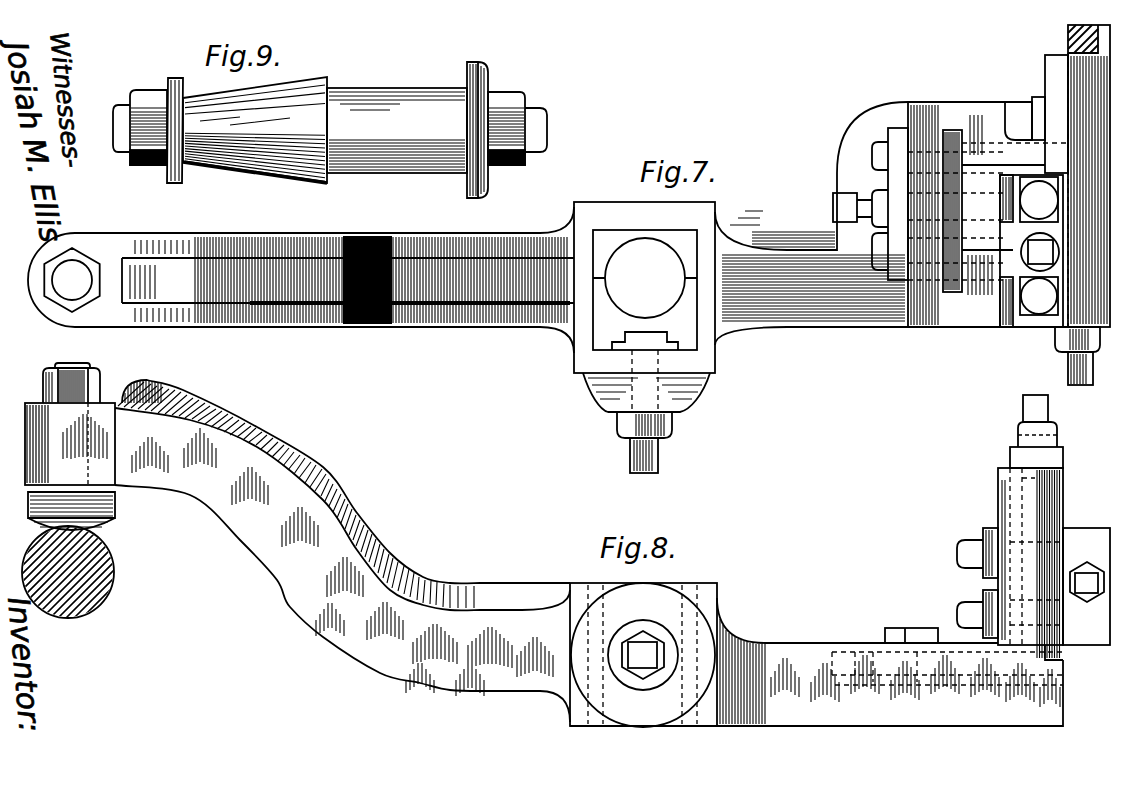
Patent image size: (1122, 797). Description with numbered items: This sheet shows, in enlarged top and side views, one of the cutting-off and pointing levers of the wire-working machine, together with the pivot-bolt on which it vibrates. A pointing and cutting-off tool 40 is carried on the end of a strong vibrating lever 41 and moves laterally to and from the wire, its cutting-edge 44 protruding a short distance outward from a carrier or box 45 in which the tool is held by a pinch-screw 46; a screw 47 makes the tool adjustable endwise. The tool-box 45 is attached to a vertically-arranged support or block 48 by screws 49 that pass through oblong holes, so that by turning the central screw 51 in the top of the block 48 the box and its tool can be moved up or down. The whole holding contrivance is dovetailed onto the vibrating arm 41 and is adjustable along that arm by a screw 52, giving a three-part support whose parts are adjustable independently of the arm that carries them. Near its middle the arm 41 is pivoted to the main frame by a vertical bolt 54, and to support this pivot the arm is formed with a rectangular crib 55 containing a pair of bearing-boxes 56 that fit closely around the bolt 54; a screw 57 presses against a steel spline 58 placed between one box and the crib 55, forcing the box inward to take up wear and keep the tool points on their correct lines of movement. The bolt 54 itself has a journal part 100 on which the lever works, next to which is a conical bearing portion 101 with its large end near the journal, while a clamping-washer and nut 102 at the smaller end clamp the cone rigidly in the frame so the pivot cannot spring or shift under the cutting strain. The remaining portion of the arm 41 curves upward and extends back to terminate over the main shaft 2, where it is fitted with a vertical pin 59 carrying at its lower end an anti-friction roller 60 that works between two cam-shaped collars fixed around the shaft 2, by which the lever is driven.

In FIG. 8, the main shaft 2 is at (94, 570).
In FIG. 7, the pointing and cutting-off tool 40 is at (1089, 176).
In FIG. 7, the vibrating lever 41 is at (468, 227).
In FIG. 8, the vibrating lever 41 is at (544, 553).
In FIG. 7, the cutting-edge 44 is at (1068, 46).
In FIG. 7, the carrier or box 45 is at (1056, 114).
In FIG. 8, the carrier or box 45 is at (1086, 578).
In FIG. 7, the pinch-screw 46 is at (1025, 118).
In FIG. 7, the screw 47 is at (1087, 356).
In FIG. 8, the screw 47 is at (1087, 594).
In FIG. 7, the support or block 48 is at (988, 214).
In FIG. 8, the support or block 48 is at (1016, 564).
In FIG. 8, the screws 49 is at (966, 581).
In FIG. 7, the central screw 51 is at (1040, 252).
In FIG. 8, the central screw 51 is at (1028, 431).
In FIG. 7, the screw 52 is at (918, 204).
In FIG. 8, the screw 52 is at (842, 660).
In FIG. 9, the vertical bolt 54 is at (397, 130).
In FIG. 7, the vertical bolt 54 is at (645, 278).
In FIG. 7, the rectangular crib 55 is at (693, 314).
In FIG. 8, the rectangular crib 55 is at (686, 583).
In FIG. 7, the bearing-boxes 56 is at (645, 290).
In FIG. 7, the screw 57 is at (658, 455).
In FIG. 8, the screw 57 is at (643, 655).
In FIG. 7, the steel spline 58 is at (645, 341).
In FIG. 7, the vertical pin 59 is at (71, 280).
In FIG. 8, the vertical pin 59 is at (73, 417).
In FIG. 8, the anti-friction roller 60 is at (83, 511).
In FIG. 9, the journal part 100 is at (461, 130).
In FIG. 9, the conical bearing portion 101 is at (255, 130).
In FIG. 9, the clamping-washer and nut 102 is at (140, 116).